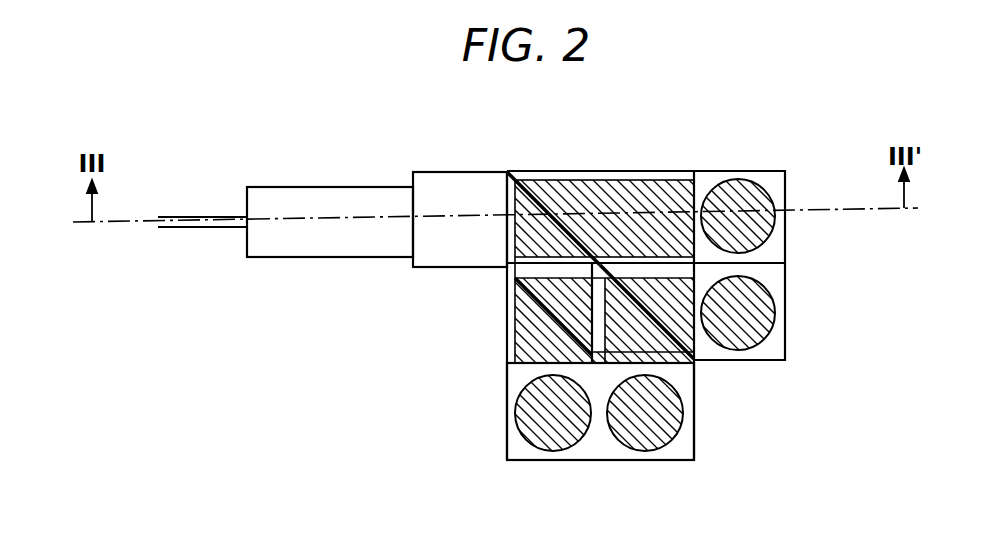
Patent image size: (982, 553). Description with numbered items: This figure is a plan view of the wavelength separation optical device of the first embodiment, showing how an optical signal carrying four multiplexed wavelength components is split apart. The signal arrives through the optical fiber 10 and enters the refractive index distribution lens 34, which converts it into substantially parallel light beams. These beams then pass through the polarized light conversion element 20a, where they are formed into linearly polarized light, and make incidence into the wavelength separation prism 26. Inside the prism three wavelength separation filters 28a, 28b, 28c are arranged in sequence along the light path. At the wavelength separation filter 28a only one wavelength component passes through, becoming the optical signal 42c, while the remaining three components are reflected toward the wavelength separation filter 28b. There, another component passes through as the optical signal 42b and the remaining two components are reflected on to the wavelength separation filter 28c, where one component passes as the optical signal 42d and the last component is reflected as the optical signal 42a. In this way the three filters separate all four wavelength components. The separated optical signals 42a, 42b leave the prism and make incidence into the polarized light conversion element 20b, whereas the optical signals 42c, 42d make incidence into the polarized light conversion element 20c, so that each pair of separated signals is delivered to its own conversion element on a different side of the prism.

The optical fiber 10 is at (190, 216).
The refractive index distribution lens 34 is at (313, 197).
The polarized light conversion element 20a is at (441, 192).
The wavelength separation prism 26 is at (651, 171).
The wavelength separation filter 28a is at (533, 183).
The wavelength separation filter 28b is at (533, 297).
The wavelength separation filter 28c is at (690, 364).
The polarized light conversion element 20b is at (606, 462).
The polarized light conversion element 20c is at (746, 171).
The optical signal 42a is at (652, 446).
The optical signal 42b is at (537, 447).
The optical signal 42c is at (591, 321).
The optical signal 42d is at (591, 321).